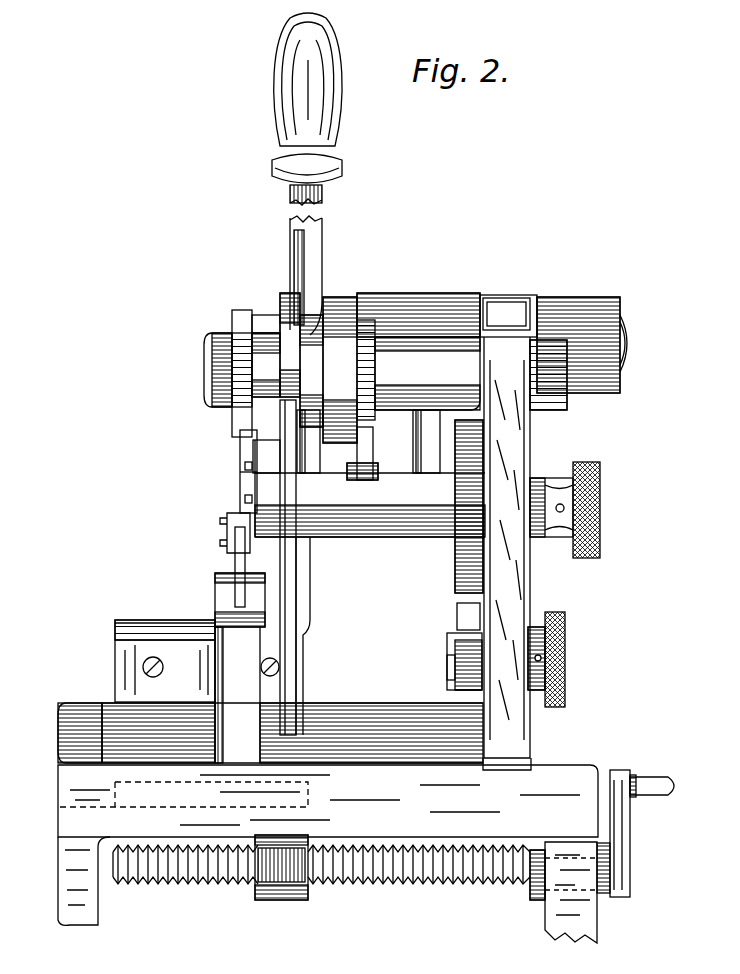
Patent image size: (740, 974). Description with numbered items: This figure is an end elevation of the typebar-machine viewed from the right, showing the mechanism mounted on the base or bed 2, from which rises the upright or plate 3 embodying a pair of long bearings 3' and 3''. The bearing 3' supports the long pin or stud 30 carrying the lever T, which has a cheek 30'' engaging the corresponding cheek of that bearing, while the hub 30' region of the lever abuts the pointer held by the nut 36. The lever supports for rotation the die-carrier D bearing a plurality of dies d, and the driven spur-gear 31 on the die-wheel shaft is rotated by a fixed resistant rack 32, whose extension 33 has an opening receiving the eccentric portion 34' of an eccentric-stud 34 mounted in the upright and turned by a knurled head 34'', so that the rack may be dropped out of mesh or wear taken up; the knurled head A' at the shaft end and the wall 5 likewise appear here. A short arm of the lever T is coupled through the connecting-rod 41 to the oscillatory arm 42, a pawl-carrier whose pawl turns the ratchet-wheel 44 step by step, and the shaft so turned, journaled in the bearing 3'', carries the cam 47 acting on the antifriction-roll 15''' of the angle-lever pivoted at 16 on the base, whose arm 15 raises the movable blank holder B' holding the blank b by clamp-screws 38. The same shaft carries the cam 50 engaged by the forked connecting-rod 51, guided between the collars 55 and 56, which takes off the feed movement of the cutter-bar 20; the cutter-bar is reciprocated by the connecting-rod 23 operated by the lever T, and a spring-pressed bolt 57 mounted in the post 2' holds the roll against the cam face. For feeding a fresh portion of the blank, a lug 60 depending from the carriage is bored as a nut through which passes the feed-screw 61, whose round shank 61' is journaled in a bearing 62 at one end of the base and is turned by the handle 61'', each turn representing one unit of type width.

The lever T is at (302, 241).
The collar 55 is at (285, 330).
The nut 36 is at (264, 318).
The collar 56 is at (221, 345).
The cam 50 is at (262, 346).
The cheek 30'' is at (277, 328).
The cam 47 is at (318, 322).
The ratchet-wheel 44 is at (348, 315).
The shaft 30' is at (418, 302).
The long bearing 3'' is at (508, 316).
The long bearing 3' is at (578, 328).
The pin or stud 30 is at (641, 343).
The upright or plate 3 is at (427, 337).
The standard 5 is at (510, 456).
The adjusting knob A' is at (579, 510).
The antifriction-roll 15''' is at (369, 473).
The oscillatory arm 42 is at (366, 443).
The connecting-rod 41 is at (366, 476).
The arm of angle-lever 15 is at (312, 567).
The connecting-rod 23 is at (305, 613).
The die-carrier D is at (250, 486).
The dies d is at (247, 466).
The forked connecting-rod 51 is at (248, 473).
The cutter-bar 20 is at (236, 581).
The spring-pressed bolt 57 is at (225, 622).
The blank holder or carrier B' is at (141, 661).
The blank b is at (140, 622).
The clamp-screws 38 is at (162, 667).
The post 2' is at (237, 695).
The pivot of angle-lever 16 is at (58, 748).
The base or bed 2 is at (328, 845).
The feed-screw 61 is at (321, 889).
The lug 60 is at (268, 893).
The round shank 61' is at (517, 893).
The bearing 62 is at (548, 905).
The handle 61'' is at (646, 833).
The driven spur-gear 31 is at (460, 563).
The rack 32 is at (463, 615).
The eccentric-stud 34 is at (445, 661).
The eccentric portion 34' is at (425, 674).
The extension 33 is at (460, 687).
The knurled head 34'' is at (570, 659).